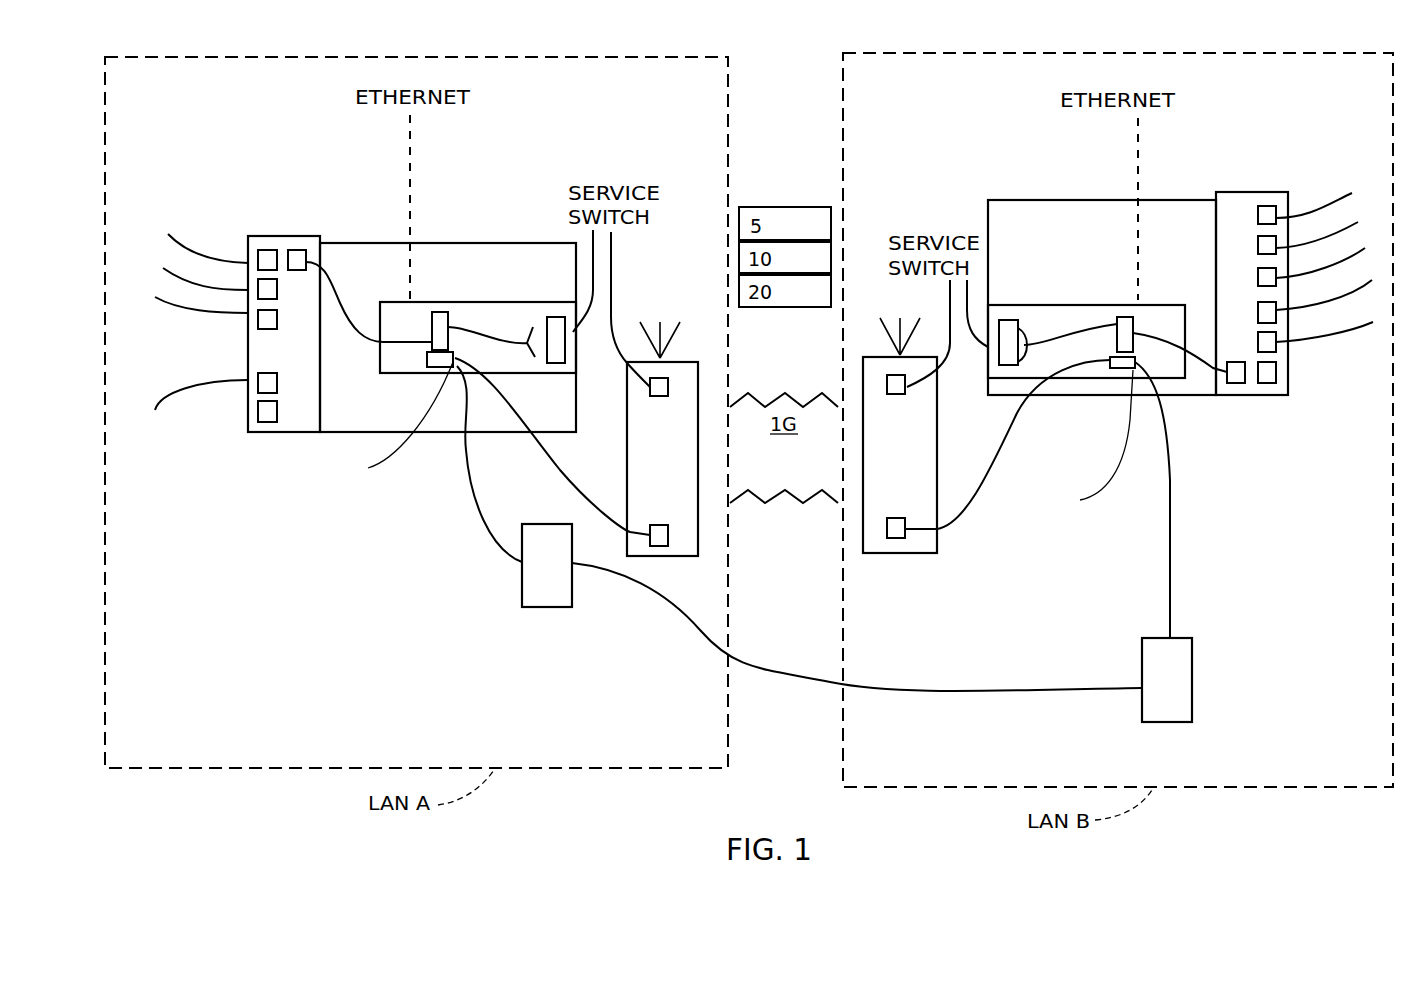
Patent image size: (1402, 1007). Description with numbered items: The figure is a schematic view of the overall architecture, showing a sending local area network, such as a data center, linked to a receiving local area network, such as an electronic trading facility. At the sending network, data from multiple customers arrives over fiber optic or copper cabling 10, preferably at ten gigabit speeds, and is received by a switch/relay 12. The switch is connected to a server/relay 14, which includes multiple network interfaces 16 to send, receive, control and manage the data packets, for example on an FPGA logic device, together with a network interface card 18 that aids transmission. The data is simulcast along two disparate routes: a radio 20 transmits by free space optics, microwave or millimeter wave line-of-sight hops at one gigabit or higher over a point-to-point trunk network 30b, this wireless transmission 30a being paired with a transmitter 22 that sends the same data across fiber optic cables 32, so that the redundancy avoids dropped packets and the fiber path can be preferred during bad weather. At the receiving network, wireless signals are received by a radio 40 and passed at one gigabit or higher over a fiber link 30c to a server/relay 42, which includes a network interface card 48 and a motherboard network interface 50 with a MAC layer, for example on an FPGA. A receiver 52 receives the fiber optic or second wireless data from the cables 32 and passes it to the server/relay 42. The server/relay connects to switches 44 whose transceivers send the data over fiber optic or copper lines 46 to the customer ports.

The fiber optic or copper cabling 10 is at (170, 148).
The switch/relay 12 is at (308, 216).
The server/relay 14 is at (468, 236).
The network interface 16 is at (440, 368).
The network interface card 18 is at (440, 330).
The radio 20 is at (624, 452).
The transmitter 22 is at (531, 610).
The wireless transmission 30a is at (541, 461).
The point-to-point trunk network 30b is at (803, 383).
The fiber link 30c is at (978, 500).
The fiber optic cables 32 is at (832, 688).
The radio 40 is at (937, 428).
The server/relay 42 is at (1060, 190).
The switch 44 is at (1232, 192).
The fiber optic lines or copper lines 46 is at (1292, 122).
The network interface card 48 is at (999, 352).
The motherboard network interface 50 is at (1122, 377).
The receiver 52 is at (1192, 690).